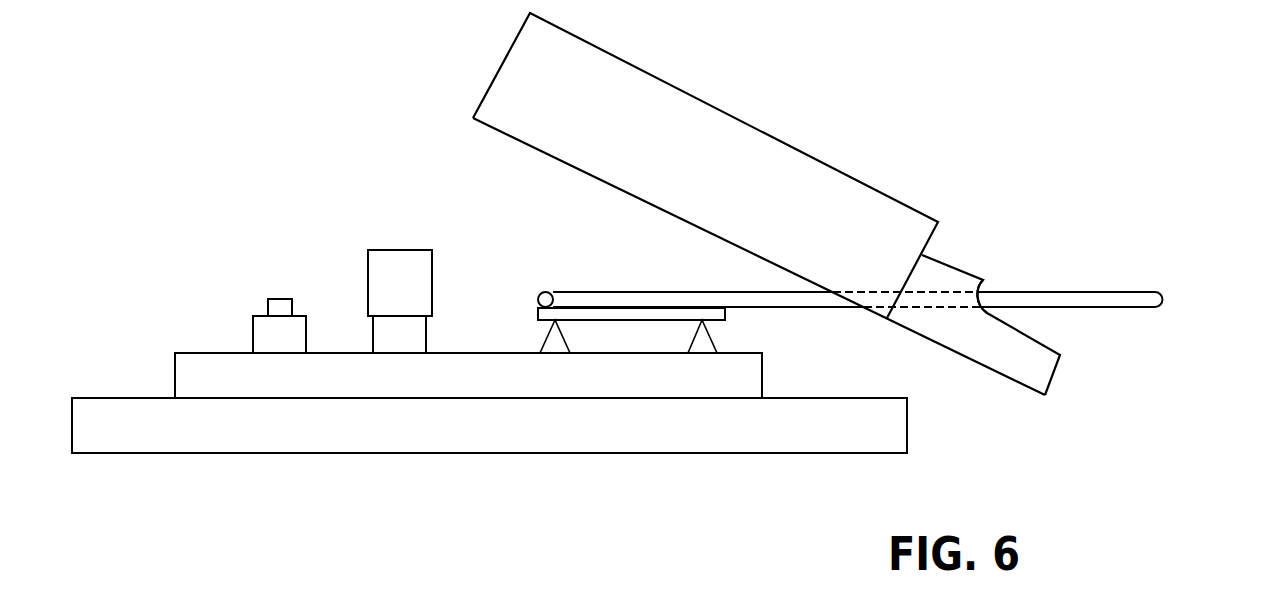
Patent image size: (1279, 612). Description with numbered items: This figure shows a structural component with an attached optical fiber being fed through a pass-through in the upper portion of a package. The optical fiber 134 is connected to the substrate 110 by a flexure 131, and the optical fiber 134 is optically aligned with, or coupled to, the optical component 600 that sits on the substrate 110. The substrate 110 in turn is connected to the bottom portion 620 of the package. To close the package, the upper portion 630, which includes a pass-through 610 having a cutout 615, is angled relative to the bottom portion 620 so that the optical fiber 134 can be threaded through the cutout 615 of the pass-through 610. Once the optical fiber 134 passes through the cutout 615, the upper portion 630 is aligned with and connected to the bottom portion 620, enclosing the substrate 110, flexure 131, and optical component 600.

The substrate 110 is at (175, 363).
The flexure 131 is at (538, 311).
The optical fiber 134 is at (1118, 292).
The optical component 600 is at (380, 253).
The pass-through 610 is at (1053, 378).
The cutout 615 is at (1097, 310).
The bottom portion 620 is at (658, 453).
The upper portion 630 is at (788, 144).